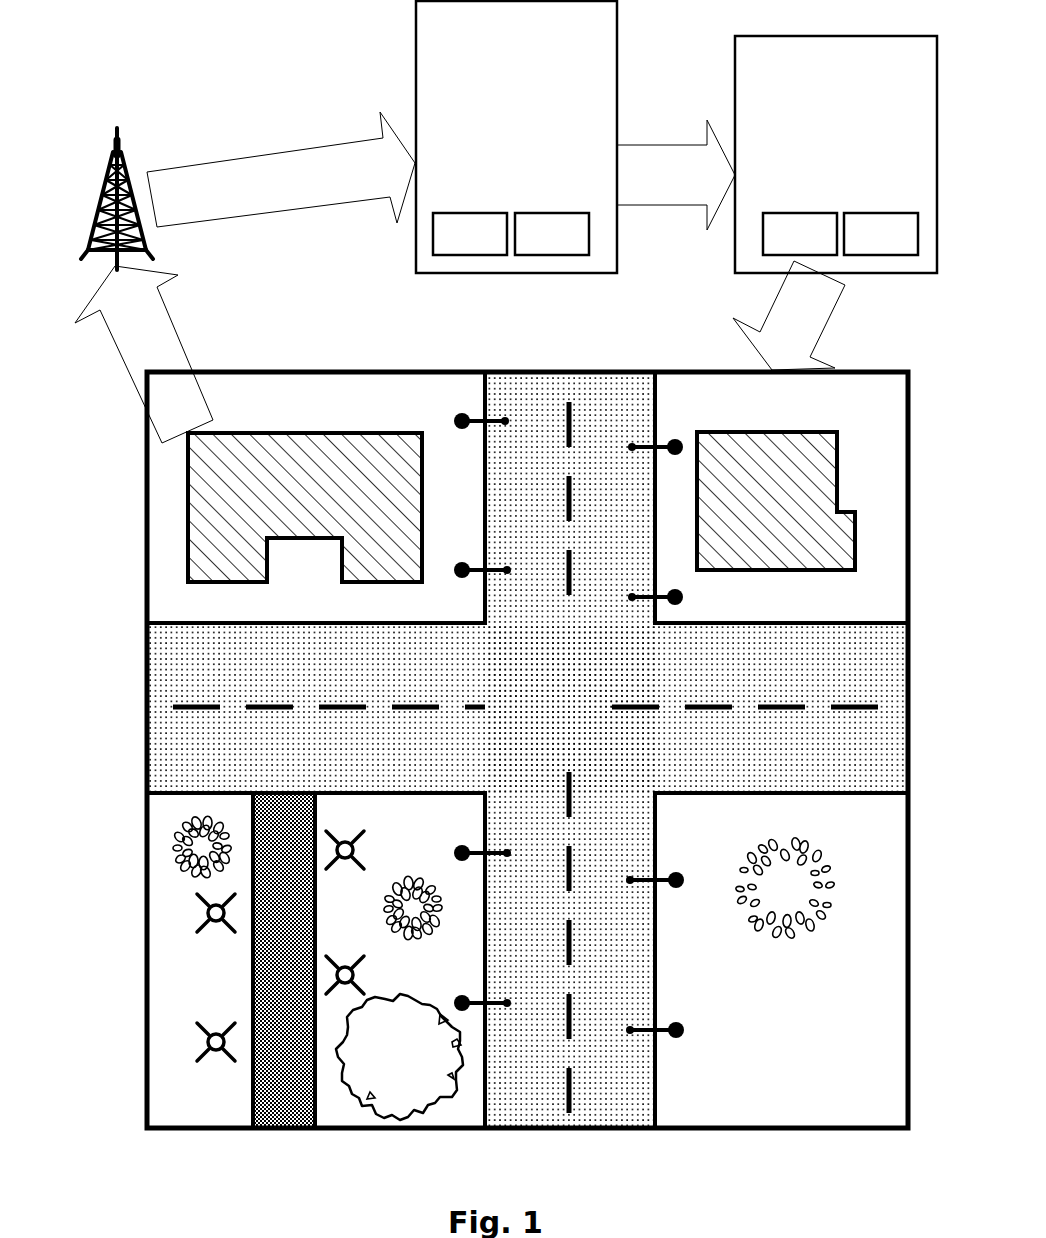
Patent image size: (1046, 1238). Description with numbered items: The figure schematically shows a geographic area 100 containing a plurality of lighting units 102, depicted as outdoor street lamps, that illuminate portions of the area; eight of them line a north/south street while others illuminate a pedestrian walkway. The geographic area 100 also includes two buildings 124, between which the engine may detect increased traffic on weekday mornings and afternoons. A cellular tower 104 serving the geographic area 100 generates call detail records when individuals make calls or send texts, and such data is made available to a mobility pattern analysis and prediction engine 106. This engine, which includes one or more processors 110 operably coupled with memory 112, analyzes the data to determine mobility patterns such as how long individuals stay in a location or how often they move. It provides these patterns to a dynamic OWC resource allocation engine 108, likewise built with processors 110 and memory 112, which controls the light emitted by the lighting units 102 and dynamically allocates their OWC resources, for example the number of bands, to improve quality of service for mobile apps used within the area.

The geographic area 100 is at (145, 580).
The lighting units 102 is at (493, 749).
The cellular tower 104 is at (150, 145).
The mobility pattern analysis and prediction engine 106 is at (516, 137).
The dynamic OWC resource allocation engine 108 is at (836, 154).
The processor 110 is at (635, 234).
The memory 112 is at (716, 234).
The building 124 is at (521, 507).